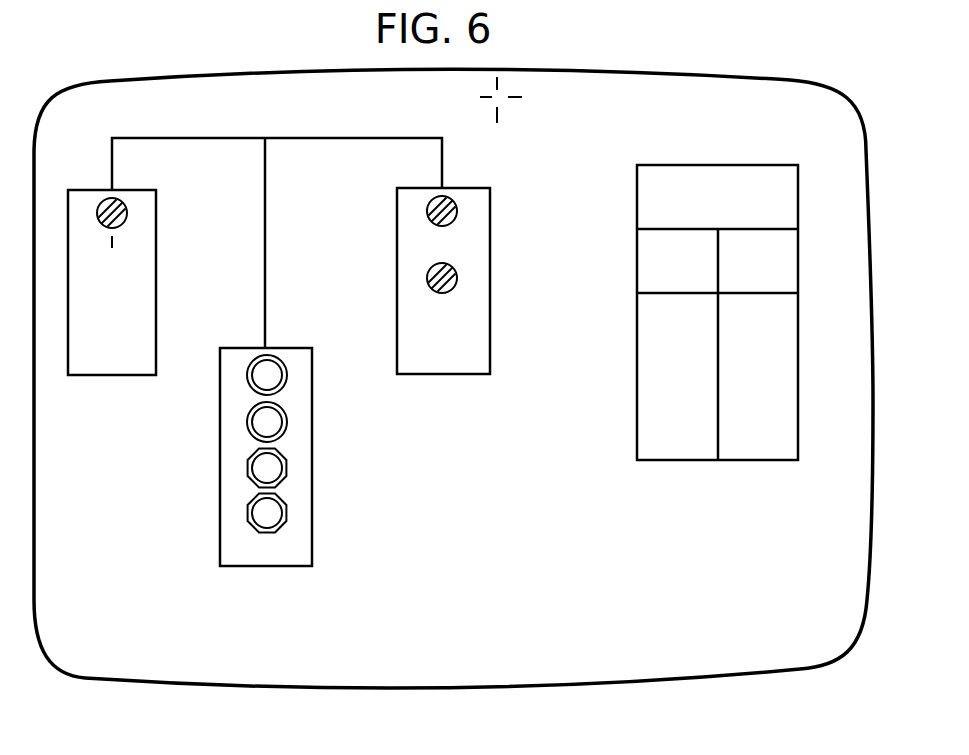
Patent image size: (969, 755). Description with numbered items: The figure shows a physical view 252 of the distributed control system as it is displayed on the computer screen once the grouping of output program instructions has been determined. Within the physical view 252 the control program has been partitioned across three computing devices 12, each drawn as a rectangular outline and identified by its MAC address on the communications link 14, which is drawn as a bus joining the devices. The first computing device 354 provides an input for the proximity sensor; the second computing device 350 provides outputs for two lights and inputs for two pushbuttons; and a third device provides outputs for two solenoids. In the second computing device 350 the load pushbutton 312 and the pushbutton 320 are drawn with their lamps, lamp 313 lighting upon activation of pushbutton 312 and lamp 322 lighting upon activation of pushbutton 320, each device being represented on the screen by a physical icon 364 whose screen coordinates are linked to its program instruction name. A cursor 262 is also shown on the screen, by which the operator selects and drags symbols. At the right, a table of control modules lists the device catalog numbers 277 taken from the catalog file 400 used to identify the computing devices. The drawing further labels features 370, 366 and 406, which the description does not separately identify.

The physical view 252 is at (795, 80).
The cursor 262 is at (484, 97).
The communications link 14 is at (268, 180).
The computing devices 12 is at (317, 358).
The first computing device 354 is at (100, 188).
The PRS 109 device label 370 is at (208, 211).
The catalog file 400 is at (478, 188).
The solenoid indicators 366 is at (428, 211).
The second computing device 350 is at (275, 348).
The lamp 313 is at (248, 385).
The lamp 322 is at (248, 426).
The load pushbutton 312 is at (248, 470).
The pushbutton 320 is at (248, 515).
The physical icon 364 is at (267, 512).
The control modules table 406 is at (675, 160).
The device catalog numbers 277 is at (648, 317).